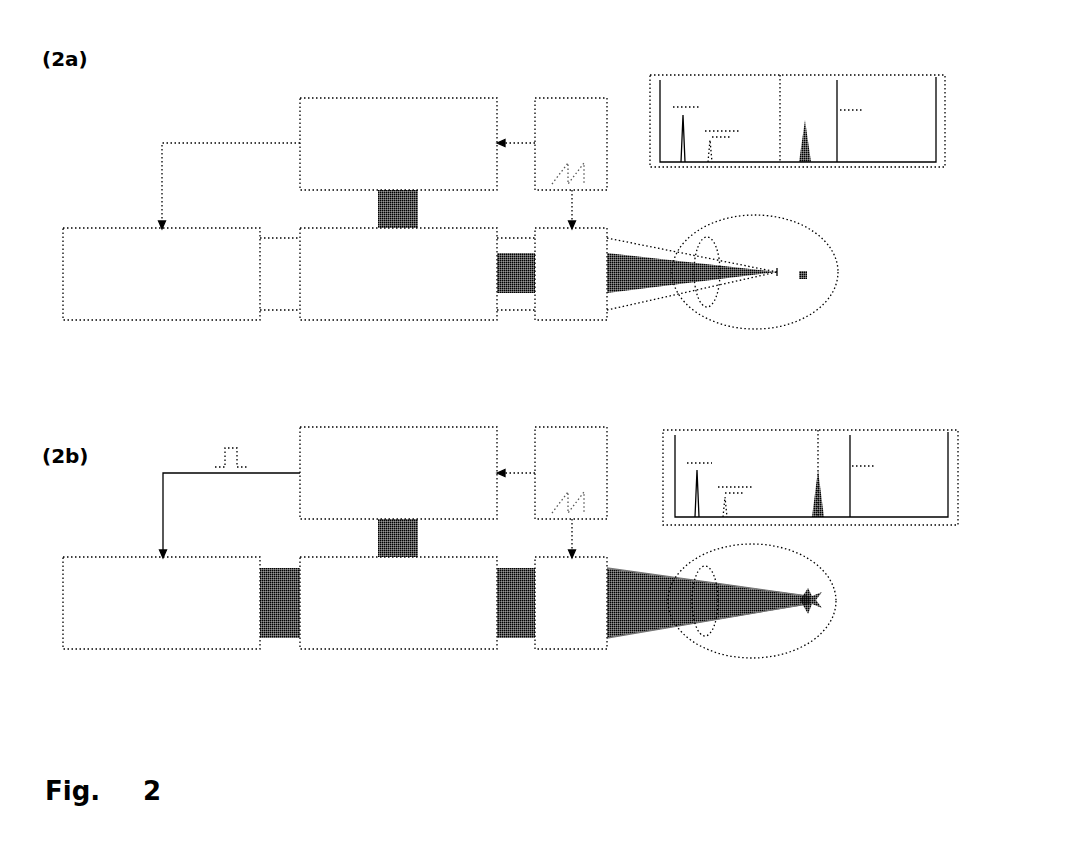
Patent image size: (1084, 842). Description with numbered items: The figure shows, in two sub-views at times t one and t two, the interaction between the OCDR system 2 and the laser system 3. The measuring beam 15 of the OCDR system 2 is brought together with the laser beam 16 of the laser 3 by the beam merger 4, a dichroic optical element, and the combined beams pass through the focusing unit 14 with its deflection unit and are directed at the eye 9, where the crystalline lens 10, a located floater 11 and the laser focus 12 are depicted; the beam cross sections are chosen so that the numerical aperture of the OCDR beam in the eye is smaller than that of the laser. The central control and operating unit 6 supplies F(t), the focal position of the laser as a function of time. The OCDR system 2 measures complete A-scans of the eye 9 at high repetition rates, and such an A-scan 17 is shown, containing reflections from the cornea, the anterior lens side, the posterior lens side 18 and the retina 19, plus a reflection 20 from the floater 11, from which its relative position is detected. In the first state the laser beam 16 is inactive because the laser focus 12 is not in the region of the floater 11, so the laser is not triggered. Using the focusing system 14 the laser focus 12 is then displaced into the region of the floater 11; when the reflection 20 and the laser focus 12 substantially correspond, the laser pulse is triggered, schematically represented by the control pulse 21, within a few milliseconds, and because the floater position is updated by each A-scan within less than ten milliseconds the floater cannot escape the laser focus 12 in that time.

The OCDR system 2 is at (390, 100).
The laser system 3 is at (150, 297).
The beam merger 4 is at (390, 298).
The central control and operating unit 6 is at (563, 113).
The eye 9 is at (757, 318).
The crystalline lens 10 is at (708, 298).
The floater 11 is at (806, 279).
The laser focus 12 is at (781, 272).
The focusing unit 14 is at (567, 298).
The measuring beam 15 is at (395, 209).
The laser beam 16 is at (283, 288).
The A-scan 17 is at (695, 85).
The posterior lens side reflection 18 is at (731, 155).
The retina reflection 19 is at (838, 132).
The floater reflection 20 is at (808, 145).
The control pulse 21 is at (225, 448).